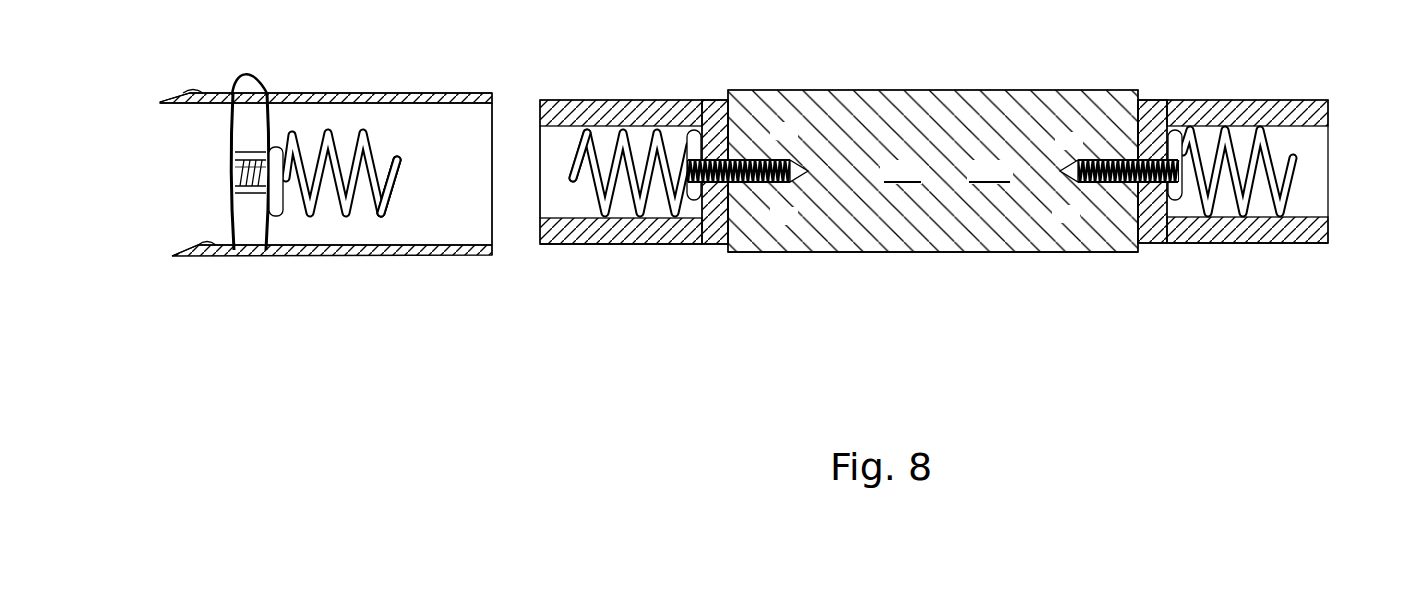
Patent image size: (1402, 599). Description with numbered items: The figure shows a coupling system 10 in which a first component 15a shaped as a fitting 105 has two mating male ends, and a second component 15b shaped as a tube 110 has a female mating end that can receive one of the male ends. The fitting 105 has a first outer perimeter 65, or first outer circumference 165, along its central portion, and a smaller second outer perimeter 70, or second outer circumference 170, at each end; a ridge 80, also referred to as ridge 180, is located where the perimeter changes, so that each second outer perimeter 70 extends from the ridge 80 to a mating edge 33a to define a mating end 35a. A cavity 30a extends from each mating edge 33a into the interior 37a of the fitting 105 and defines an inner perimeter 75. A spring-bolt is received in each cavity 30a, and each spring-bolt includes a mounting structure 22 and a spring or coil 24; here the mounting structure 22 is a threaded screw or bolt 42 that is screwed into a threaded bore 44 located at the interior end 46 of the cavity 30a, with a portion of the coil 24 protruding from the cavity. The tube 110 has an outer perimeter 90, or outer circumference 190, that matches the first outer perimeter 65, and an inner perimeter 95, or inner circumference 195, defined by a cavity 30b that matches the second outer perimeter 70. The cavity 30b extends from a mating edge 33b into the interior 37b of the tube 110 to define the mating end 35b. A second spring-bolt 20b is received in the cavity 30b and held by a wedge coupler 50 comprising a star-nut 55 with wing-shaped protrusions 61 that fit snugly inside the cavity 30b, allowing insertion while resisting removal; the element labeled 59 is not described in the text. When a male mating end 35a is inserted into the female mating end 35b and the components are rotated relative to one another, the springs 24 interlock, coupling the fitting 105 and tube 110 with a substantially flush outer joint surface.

The coupling system 10 is at (674, 333).
The first component 15a is at (902, 172).
The second component 15b is at (247, 265).
The second spring-bolt 20b is at (214, 168).
The mounting structure 22 is at (726, 150).
The spring or coil 24 is at (589, 203).
The cavity of first component 30a is at (548, 188).
The cavity of second component 30b is at (357, 183).
The mating edge of first component 33a is at (540, 208).
The mating edge of second component 33b is at (489, 132).
The mating end of first component 35a is at (526, 210).
The mating end of second component 35b is at (499, 240).
The interior of first component 37a is at (813, 232).
The interior of second component 37b is at (335, 237).
The threaded screw or bolt 42 is at (762, 170).
The threaded bore 44 is at (760, 176).
The interior end of cavity 46 is at (704, 141).
The wedge coupler 50 is at (230, 213).
The star-nut 55 is at (257, 148).
The threaded insert 59 is at (230, 176).
The wing-shaped protrusions 61 is at (246, 70).
The first outer perimeter 65 is at (980, 90).
The second outer perimeter 70 is at (603, 100).
The inner perimeter of first component 75 is at (625, 233).
The ridge 80 is at (745, 91).
The outer perimeter of second component 90 is at (343, 93).
The inner perimeter of second component 95 is at (424, 244).
The fitting 105 is at (989, 172).
The tube 110 is at (286, 262).
The first outer circumference 165 is at (1043, 90).
The second outer circumference 170 is at (668, 245).
The ridge of fitting 180 is at (725, 248).
The outer circumference of tube 190 is at (386, 93).
The inner circumference of tube 195 is at (402, 104).